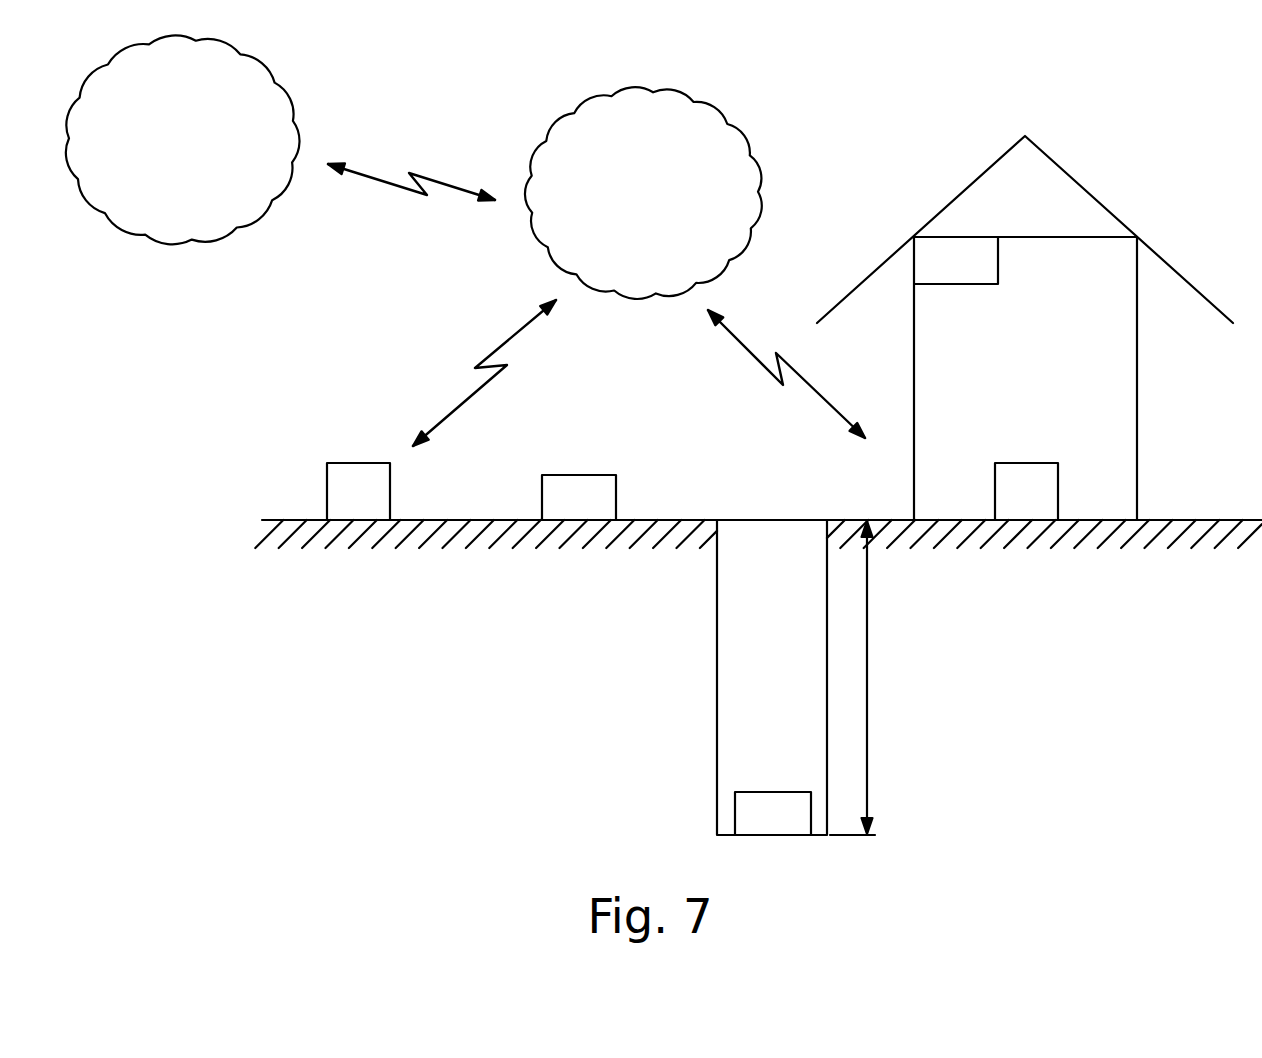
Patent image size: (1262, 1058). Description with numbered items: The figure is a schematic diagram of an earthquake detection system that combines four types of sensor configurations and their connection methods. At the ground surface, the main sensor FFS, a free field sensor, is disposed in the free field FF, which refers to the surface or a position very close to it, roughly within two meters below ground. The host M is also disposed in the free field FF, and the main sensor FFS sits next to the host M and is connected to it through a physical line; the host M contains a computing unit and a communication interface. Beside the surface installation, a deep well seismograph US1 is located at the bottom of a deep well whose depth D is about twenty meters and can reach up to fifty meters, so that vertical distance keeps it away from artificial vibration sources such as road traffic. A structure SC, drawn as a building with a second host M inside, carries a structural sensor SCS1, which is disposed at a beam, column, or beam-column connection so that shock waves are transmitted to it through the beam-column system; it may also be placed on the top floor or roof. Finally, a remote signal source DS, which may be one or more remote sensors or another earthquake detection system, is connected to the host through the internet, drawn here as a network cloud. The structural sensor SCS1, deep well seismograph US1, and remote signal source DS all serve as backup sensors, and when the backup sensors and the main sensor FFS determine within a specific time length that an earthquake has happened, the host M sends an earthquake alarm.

The remote signal source DS is at (183, 139).
The communication network is at (643, 193).
The structure SC is at (1005, 402).
The structural sensor SCS1 is at (913, 270).
The host M is at (342, 508).
The free field FF is at (290, 519).
The main sensor (free field sensor) FFS is at (561, 475).
The deep well seismograph US1 is at (735, 808).
The depth D is at (867, 678).